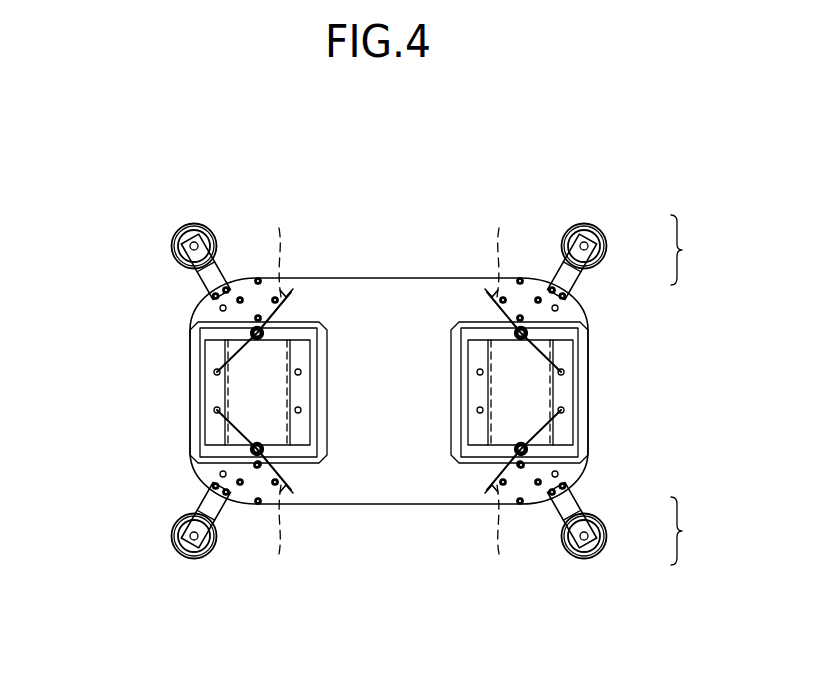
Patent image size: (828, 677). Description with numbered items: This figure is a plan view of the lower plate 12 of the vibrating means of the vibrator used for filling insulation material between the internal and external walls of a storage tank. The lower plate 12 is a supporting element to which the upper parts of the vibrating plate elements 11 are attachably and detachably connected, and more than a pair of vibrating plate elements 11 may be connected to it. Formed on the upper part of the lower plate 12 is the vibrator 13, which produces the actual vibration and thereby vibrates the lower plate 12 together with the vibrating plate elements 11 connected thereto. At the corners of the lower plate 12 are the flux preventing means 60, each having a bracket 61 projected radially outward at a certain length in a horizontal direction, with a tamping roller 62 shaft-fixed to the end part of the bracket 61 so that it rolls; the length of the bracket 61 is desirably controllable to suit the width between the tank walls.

The vibrating plate element 11 is at (390, 389).
The lower plate 12 is at (376, 295).
The vibrator 13 is at (212, 400).
The flux preventing means 60 is at (689, 390).
The bracket 61 is at (210, 281).
The tamping roller 62 is at (181, 244).